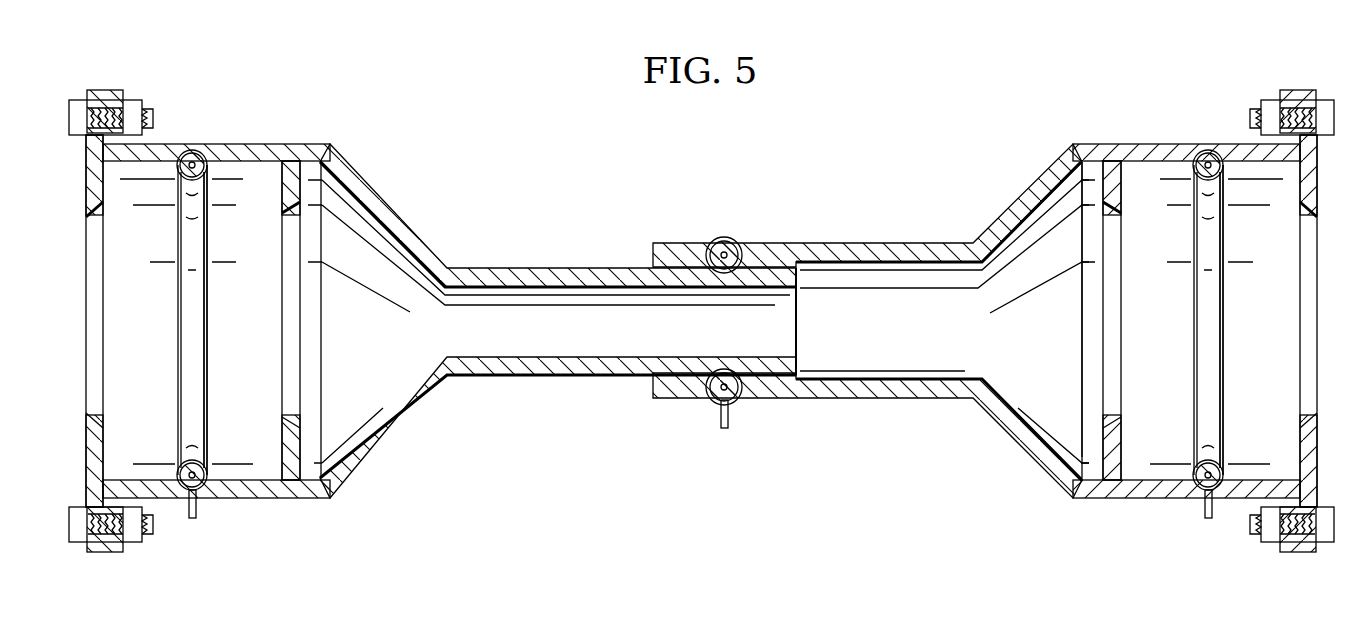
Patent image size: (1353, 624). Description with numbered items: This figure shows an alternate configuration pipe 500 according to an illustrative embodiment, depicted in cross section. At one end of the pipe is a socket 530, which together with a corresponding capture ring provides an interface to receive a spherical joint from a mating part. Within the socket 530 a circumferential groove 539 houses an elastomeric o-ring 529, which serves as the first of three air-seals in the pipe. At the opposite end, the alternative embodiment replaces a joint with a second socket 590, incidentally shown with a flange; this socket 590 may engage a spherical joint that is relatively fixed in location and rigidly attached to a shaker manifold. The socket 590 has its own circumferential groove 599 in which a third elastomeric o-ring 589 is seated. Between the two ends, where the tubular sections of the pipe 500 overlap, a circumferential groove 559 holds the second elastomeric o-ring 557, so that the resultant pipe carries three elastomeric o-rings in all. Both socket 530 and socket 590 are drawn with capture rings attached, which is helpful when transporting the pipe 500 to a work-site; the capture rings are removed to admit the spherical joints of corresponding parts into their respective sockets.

The alternate configuration pipe 500 is at (553, 77).
The socket 530 is at (452, 82).
The socket 590 is at (1313, 82).
The elastomeric o-ring 529 is at (176, 318).
The circumferential groove 539 is at (214, 318).
The elastomeric o-ring 589 is at (1193, 318).
The circumferential groove 599 is at (1227, 318).
The elastomeric o-ring 557 is at (708, 236).
The circumferential groove 559 is at (736, 236).